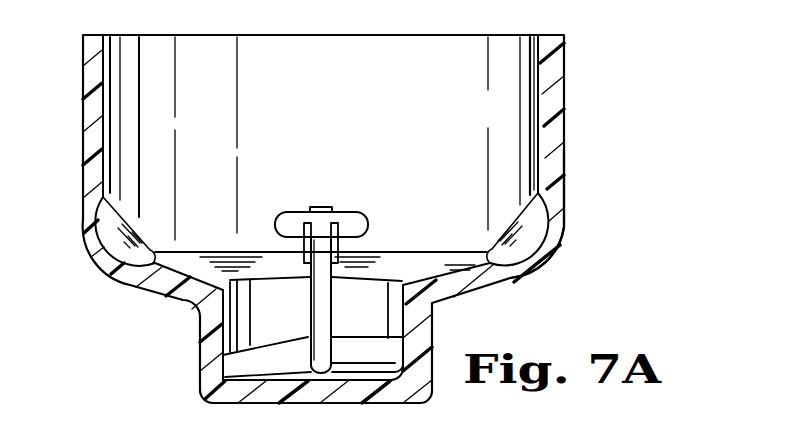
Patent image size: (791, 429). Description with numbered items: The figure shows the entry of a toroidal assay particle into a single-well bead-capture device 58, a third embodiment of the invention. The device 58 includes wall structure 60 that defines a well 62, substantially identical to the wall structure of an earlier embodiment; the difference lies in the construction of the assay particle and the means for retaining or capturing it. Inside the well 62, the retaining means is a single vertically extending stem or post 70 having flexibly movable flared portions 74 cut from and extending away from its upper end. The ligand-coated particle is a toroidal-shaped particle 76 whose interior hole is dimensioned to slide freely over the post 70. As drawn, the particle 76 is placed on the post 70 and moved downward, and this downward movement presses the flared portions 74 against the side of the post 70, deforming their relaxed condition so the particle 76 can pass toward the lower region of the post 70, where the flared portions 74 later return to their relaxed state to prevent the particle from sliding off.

The bead-capture device 58 is at (567, 110).
The wall structure 60 is at (563, 192).
The well 62 is at (362, 315).
The post 70 is at (320, 292).
The flared portions 74 is at (335, 252).
The toroidal-shaped particle 76 is at (288, 223).